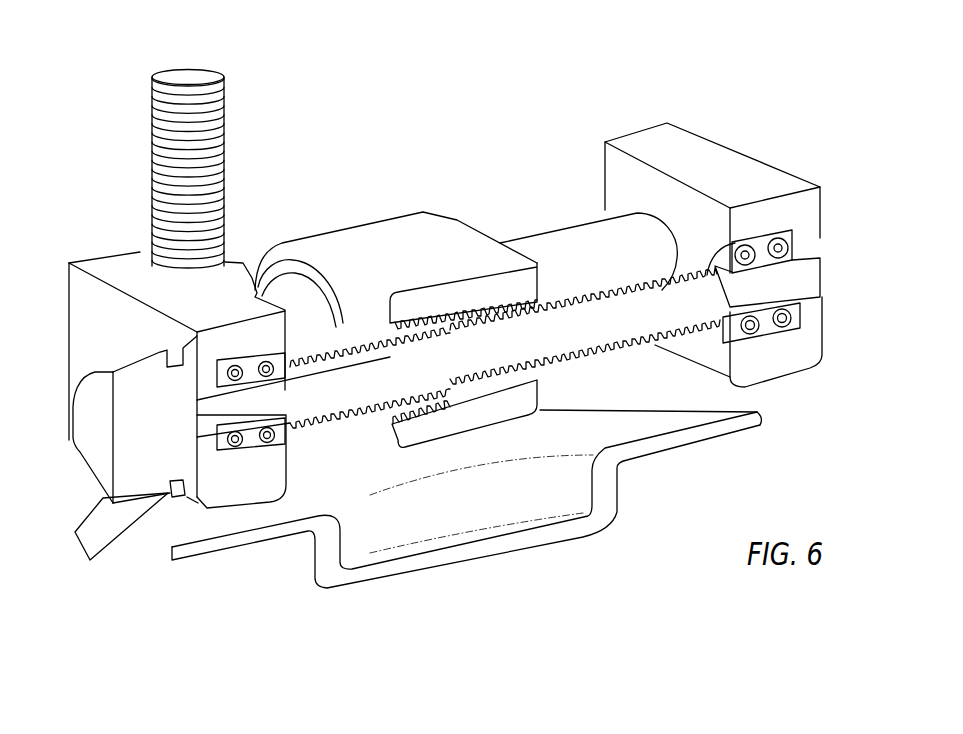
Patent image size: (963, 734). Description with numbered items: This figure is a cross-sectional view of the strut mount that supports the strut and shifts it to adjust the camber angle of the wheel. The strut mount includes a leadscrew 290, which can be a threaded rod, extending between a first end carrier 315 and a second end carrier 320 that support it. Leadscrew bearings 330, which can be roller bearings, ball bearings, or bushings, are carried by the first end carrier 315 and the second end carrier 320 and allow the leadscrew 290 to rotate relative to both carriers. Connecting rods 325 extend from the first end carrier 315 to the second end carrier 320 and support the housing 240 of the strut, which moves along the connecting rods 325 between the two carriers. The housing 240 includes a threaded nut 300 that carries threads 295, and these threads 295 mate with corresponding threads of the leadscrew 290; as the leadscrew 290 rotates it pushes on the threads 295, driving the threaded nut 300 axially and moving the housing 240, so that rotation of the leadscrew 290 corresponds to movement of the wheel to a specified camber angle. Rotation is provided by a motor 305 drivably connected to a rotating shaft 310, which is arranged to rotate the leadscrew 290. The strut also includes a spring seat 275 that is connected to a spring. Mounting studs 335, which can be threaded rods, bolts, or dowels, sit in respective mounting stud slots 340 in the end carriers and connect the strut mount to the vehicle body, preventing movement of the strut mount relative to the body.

The housing 240 is at (403, 227).
The spring seat 275 is at (232, 547).
The leadscrew 290 is at (607, 327).
The threads 295 is at (369, 343).
The threaded nut 300 is at (377, 438).
The motor 305 is at (97, 449).
The rotating shaft 310 is at (185, 492).
The first end carrier 315 is at (705, 136).
The second end carrier 320 is at (83, 295).
The connecting rods 325 is at (563, 240).
The leadscrew bearings 330 is at (268, 358).
The mounting studs 335 is at (173, 73).
The mounting stud slots 340 is at (137, 267).